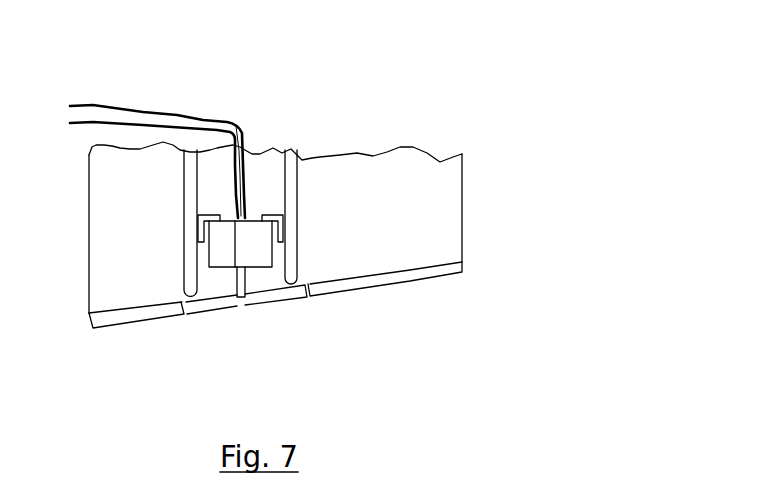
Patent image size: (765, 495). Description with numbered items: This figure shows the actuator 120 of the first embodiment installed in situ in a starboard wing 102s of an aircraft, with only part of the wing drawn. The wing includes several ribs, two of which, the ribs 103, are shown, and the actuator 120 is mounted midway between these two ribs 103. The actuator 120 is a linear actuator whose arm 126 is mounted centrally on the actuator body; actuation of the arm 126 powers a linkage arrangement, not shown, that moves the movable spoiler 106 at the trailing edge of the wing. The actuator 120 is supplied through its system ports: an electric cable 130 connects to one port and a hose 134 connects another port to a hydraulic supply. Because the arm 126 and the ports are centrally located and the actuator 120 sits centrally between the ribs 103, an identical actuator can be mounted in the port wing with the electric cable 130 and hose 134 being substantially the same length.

The starboard wing 102s is at (340, 167).
The ribs 103 is at (185, 247).
The spoiler 106 is at (260, 297).
The actuator 120 is at (272, 263).
The arm 126 is at (206, 312).
The electric cable 130 is at (80, 122).
The hose 134 is at (220, 120).